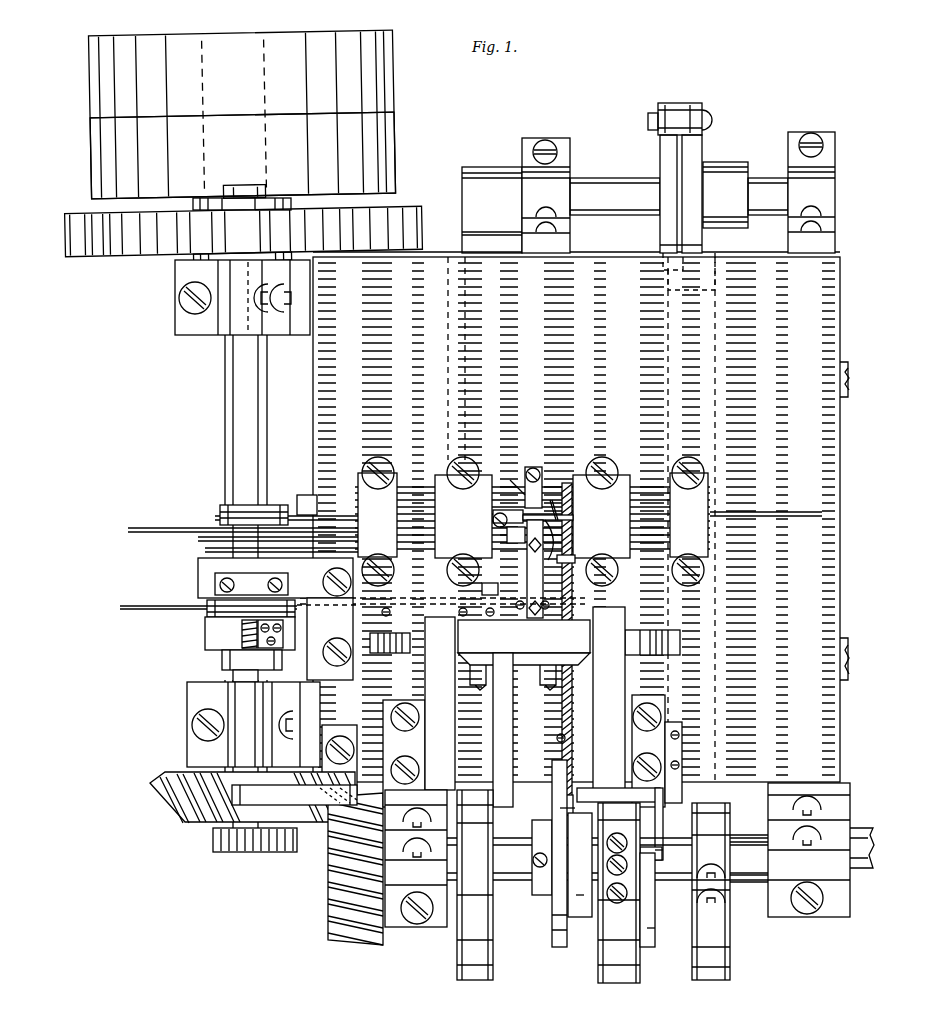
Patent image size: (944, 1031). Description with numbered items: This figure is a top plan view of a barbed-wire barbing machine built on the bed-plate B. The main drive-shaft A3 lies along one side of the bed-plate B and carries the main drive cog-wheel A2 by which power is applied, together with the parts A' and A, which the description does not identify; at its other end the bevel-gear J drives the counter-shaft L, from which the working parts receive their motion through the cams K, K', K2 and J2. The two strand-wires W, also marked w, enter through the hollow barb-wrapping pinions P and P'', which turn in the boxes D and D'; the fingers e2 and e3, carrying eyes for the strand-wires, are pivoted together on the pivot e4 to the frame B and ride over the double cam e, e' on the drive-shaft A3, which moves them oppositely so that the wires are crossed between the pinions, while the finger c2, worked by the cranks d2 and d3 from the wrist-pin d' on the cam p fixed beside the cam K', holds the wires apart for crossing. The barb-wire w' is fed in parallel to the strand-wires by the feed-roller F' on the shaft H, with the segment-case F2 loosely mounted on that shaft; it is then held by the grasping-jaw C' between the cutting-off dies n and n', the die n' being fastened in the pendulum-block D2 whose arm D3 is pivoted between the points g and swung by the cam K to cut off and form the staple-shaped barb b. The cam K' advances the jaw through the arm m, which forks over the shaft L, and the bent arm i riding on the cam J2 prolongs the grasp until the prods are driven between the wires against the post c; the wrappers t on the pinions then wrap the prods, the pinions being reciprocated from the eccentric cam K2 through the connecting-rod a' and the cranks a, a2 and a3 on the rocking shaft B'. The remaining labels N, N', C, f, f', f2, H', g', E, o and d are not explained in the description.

The pulley A' is at (241, 114).
The pulley A is at (242, 155).
The main drive cog-wheel A2 is at (244, 231).
The main drive-shaft A3 is at (246, 581).
The bed-plate B is at (576, 517).
The rocking shaft B' is at (679, 195).
The tab N is at (848, 370).
The tab N' is at (850, 650).
The crank a is at (492, 210).
The connecting-rod a' is at (681, 194).
The crank a2 is at (680, 132).
The crank a3 is at (681, 243).
The strand-wires W is at (475, 518).
The double cam e is at (254, 506).
The finger e2 is at (215, 516).
The finger e3 is at (269, 540).
The double cam e' is at (274, 555).
The pivot e4 is at (305, 495).
The barb-wrapping pinion P is at (414, 468).
The barb-wrapping pinion P'' is at (652, 470).
The box D' is at (533, 521).
The box D is at (532, 521).
The finger c2 is at (573, 592).
The block C is at (533, 487).
The wrapper t is at (538, 515).
The grasping-jaw C' is at (540, 569).
The barb b is at (518, 500).
The strand-wires w is at (556, 486).
The post c is at (510, 478).
The cutting-off die n is at (490, 589).
The cutting-off die n' is at (507, 593).
The block f is at (275, 619).
The plate f' is at (251, 584).
The barb-wire w' is at (240, 599).
The feed-roller F' is at (235, 615).
The segment-case F2 is at (205, 640).
The shaft H is at (253, 724).
The bevel-gear J is at (282, 822).
The collar f2 is at (294, 795).
The gear H' is at (255, 849).
The pivot points g is at (390, 654).
The nut g' is at (662, 642).
The upright E is at (525, 698).
The pendulum-block D2 is at (524, 655).
The arm D3 is at (503, 730).
The screw o is at (613, 762).
The bracket d is at (620, 799).
The counter-shaft L is at (862, 822).
The cam K is at (475, 885).
The bent arm i is at (544, 857).
The arm m is at (580, 865).
The cam-wheel K' is at (619, 893).
The wrist-pin d' is at (656, 900).
The crank d2 is at (660, 855).
The cam p is at (655, 928).
The crank d3 is at (560, 812).
The cam J2 is at (540, 896).
The eccentric cam K2 is at (730, 891).